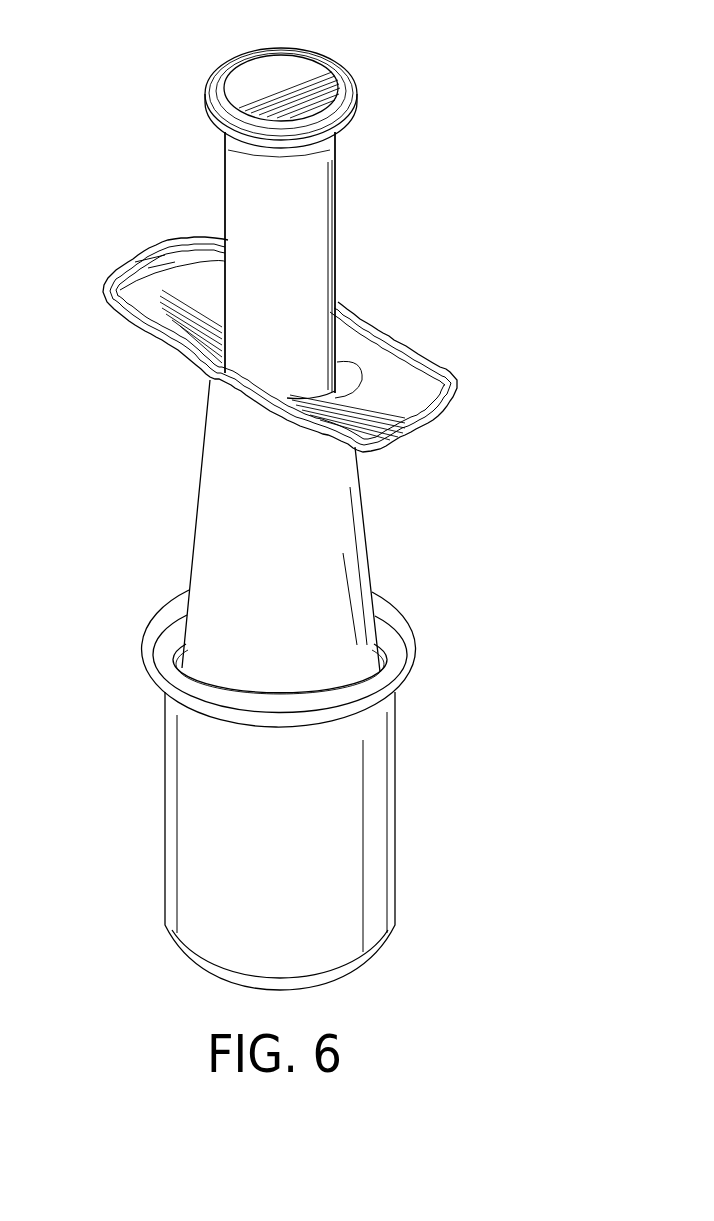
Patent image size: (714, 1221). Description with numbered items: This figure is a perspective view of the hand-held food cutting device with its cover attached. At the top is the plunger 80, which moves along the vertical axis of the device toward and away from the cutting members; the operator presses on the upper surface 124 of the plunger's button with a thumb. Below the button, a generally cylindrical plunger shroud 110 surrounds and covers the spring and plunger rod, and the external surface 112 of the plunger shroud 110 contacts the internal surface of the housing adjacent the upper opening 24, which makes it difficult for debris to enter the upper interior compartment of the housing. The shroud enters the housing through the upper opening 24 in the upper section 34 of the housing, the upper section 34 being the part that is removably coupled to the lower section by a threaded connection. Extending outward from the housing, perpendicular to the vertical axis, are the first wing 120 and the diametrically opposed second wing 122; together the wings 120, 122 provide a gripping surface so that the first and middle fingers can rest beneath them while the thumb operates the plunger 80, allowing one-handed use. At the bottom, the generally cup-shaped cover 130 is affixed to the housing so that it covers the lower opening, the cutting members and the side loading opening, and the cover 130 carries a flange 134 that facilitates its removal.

The plunger 80 is at (200, 190).
The plunger shroud 110 is at (298, 186).
The external surface 112 is at (337, 227).
The first wing 120 is at (453, 378).
The second wing 122 is at (140, 283).
The upper surface 124 is at (298, 70).
The upper opening 24 is at (343, 360).
The upper section 34 is at (170, 487).
The cover 130 is at (422, 798).
The flange 134 is at (397, 642).